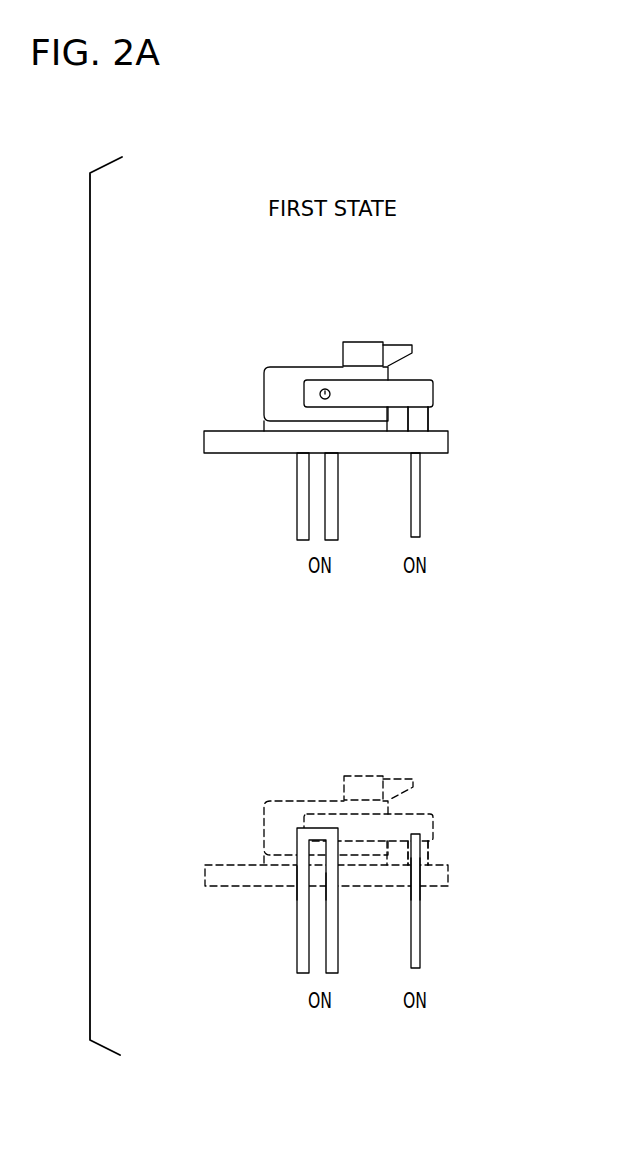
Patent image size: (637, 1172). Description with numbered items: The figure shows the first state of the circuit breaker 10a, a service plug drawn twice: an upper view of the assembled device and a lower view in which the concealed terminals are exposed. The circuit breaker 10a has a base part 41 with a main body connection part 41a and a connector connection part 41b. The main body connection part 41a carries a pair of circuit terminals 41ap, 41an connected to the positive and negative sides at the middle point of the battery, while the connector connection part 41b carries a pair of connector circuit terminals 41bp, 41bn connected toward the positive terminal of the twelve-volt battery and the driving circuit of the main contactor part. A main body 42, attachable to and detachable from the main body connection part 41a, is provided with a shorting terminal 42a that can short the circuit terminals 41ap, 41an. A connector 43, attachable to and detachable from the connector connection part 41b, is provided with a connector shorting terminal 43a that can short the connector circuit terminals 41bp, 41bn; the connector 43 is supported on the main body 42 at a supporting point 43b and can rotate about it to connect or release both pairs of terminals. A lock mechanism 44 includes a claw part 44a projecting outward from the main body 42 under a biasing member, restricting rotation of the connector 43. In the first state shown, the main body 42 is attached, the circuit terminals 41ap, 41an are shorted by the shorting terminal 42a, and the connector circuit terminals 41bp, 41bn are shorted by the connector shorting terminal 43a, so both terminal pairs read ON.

The circuit breaker 10a is at (232, 300).
The base part 41 is at (203, 421).
The main body connection part 41a is at (263, 426).
The connector connection part 41b is at (428, 418).
The circuit terminal 41ap is at (297, 866).
The circuit terminal 41an is at (327, 873).
The connector circuit terminal 41bp is at (411, 857).
The connector circuit terminal 41bn is at (421, 857).
The main body 42 is at (266, 366).
The shorting terminal 42a is at (300, 828).
The connector 43 is at (417, 380).
The connector shorting terminal 43a is at (414, 833).
The supporting point 43b is at (321, 389).
The lock mechanism 44 is at (406, 541).
The claw part 44a is at (396, 345).